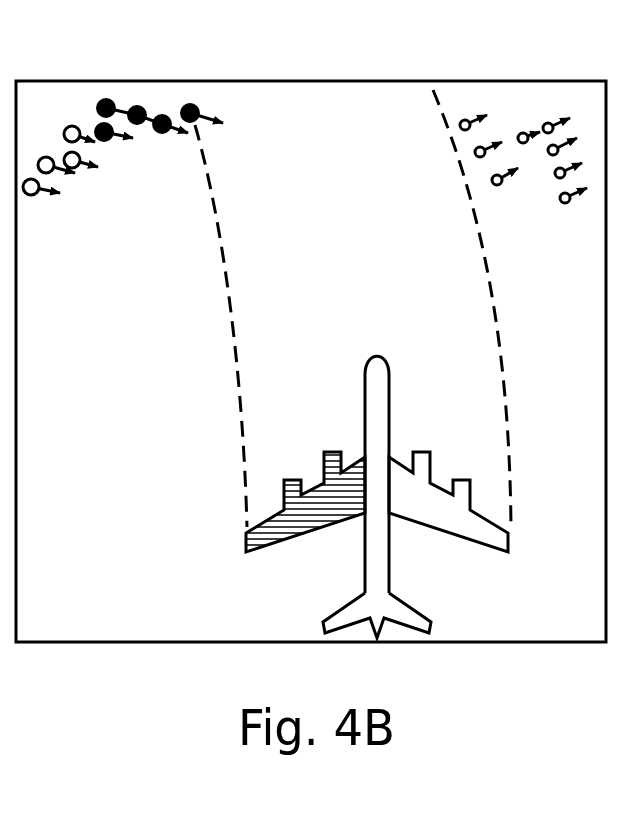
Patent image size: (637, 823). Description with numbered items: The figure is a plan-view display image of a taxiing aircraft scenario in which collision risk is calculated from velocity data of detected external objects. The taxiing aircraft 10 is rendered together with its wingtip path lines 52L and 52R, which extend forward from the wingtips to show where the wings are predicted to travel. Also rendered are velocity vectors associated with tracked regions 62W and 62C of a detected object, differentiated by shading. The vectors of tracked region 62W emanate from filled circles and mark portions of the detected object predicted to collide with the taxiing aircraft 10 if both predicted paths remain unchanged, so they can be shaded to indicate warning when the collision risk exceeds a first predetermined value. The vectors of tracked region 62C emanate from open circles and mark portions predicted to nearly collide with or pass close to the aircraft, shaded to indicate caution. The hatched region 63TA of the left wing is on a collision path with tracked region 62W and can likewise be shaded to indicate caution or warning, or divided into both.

The taxiing aircraft 10 is at (374, 491).
The tracked region (warning) 62W is at (189, 104).
The tracked region (caution) 62C is at (30, 195).
The left wingtip path line 52L is at (226, 246).
The right wingtip path line 52R is at (488, 270).
The region of left wing 63TA is at (305, 536).